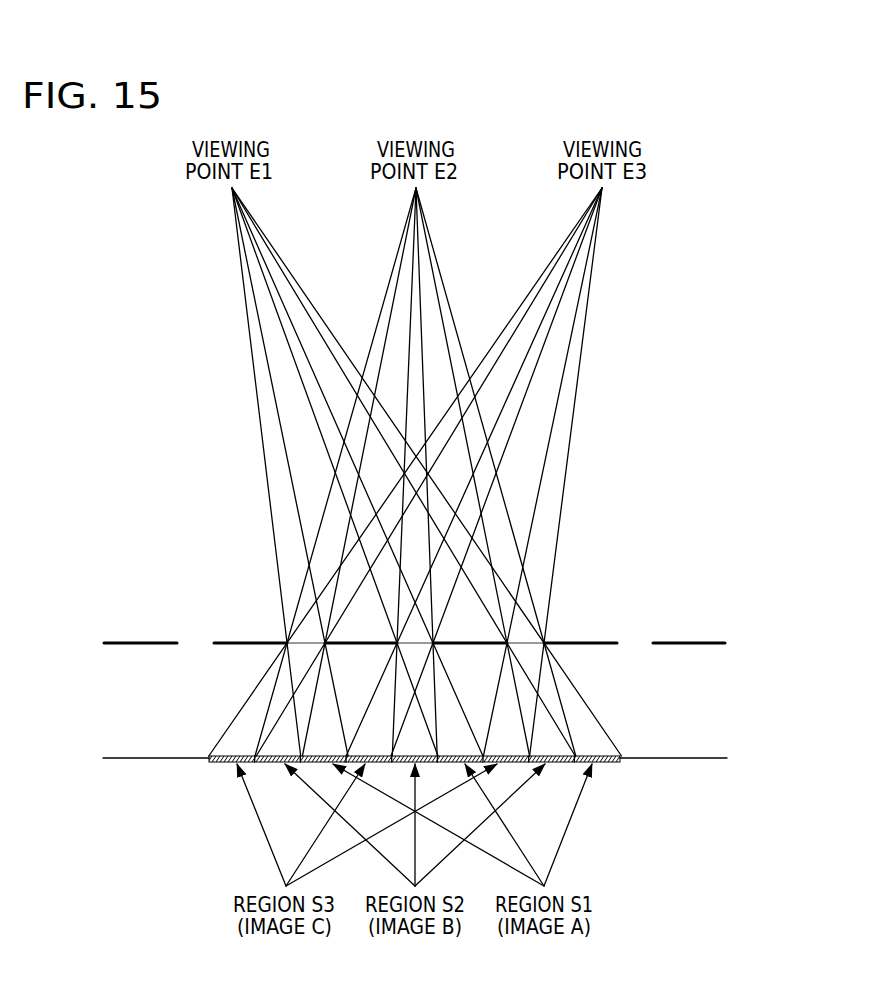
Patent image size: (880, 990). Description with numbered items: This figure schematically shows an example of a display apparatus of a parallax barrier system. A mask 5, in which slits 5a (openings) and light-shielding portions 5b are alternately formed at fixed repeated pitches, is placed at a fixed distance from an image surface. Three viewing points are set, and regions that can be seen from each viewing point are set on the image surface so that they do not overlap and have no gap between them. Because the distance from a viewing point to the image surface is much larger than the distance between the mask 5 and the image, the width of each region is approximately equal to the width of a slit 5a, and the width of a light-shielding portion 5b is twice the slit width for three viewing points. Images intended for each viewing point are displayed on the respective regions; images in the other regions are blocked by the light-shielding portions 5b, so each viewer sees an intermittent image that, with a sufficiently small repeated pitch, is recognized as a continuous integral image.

The mask 5 is at (698, 643).
The slit 5a is at (631, 647).
The light-shielding portion 5b is at (579, 643).